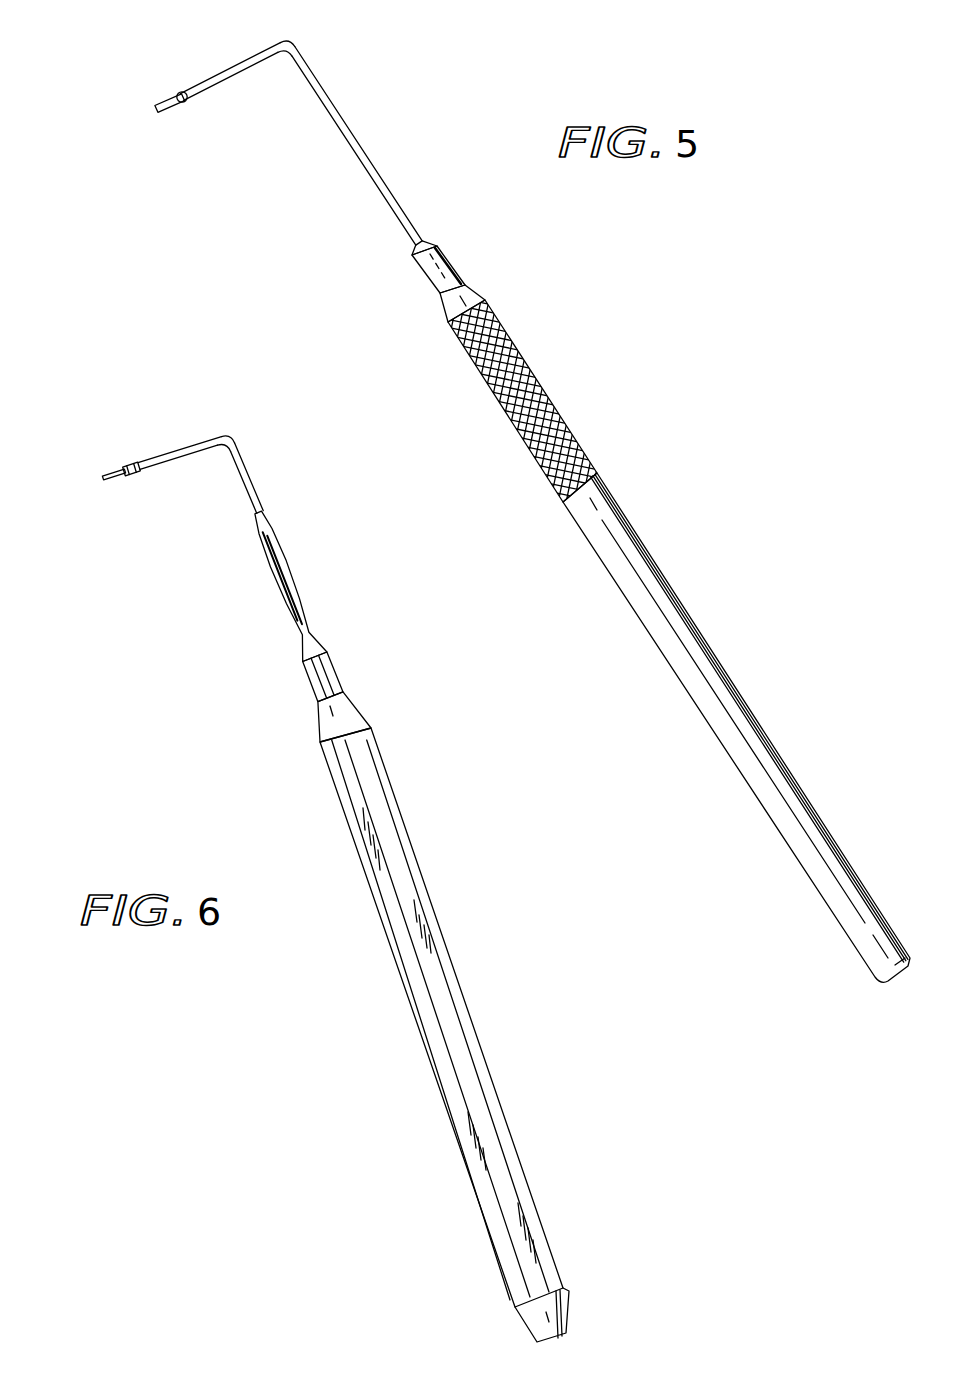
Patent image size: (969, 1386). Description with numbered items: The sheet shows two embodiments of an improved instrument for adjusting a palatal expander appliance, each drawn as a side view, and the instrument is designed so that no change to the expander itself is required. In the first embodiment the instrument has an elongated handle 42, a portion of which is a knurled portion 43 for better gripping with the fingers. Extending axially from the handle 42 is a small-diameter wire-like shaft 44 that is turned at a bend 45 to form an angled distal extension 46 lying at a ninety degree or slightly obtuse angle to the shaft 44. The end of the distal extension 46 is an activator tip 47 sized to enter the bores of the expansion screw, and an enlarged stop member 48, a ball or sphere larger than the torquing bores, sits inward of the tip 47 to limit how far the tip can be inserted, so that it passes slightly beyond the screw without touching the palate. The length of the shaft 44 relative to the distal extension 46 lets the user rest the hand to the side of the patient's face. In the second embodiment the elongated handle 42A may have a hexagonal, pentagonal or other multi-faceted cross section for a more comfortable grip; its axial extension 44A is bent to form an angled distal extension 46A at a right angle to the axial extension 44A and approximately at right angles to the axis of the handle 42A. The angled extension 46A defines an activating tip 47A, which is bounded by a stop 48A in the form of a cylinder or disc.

In FIG. 5, the handle 42 is at (703, 638).
In FIG. 5, the knurled portion 43 is at (541, 387).
In FIG. 5, the shaft 44 is at (361, 146).
In FIG. 5, the bend 45 is at (292, 40).
In FIG. 5, the angled distal extension 46 is at (213, 74).
In FIG. 5, the activator tip 47 is at (160, 103).
In FIG. 5, the stop member 48 is at (187, 104).
In FIG. 6, the handle 42A is at (437, 1087).
In FIG. 6, the axial extension 44A is at (257, 498).
In FIG. 6, the angled distal extension 46A is at (165, 450).
In FIG. 6, the activating tip 47A is at (100, 484).
In FIG. 6, the stop 48A is at (123, 465).